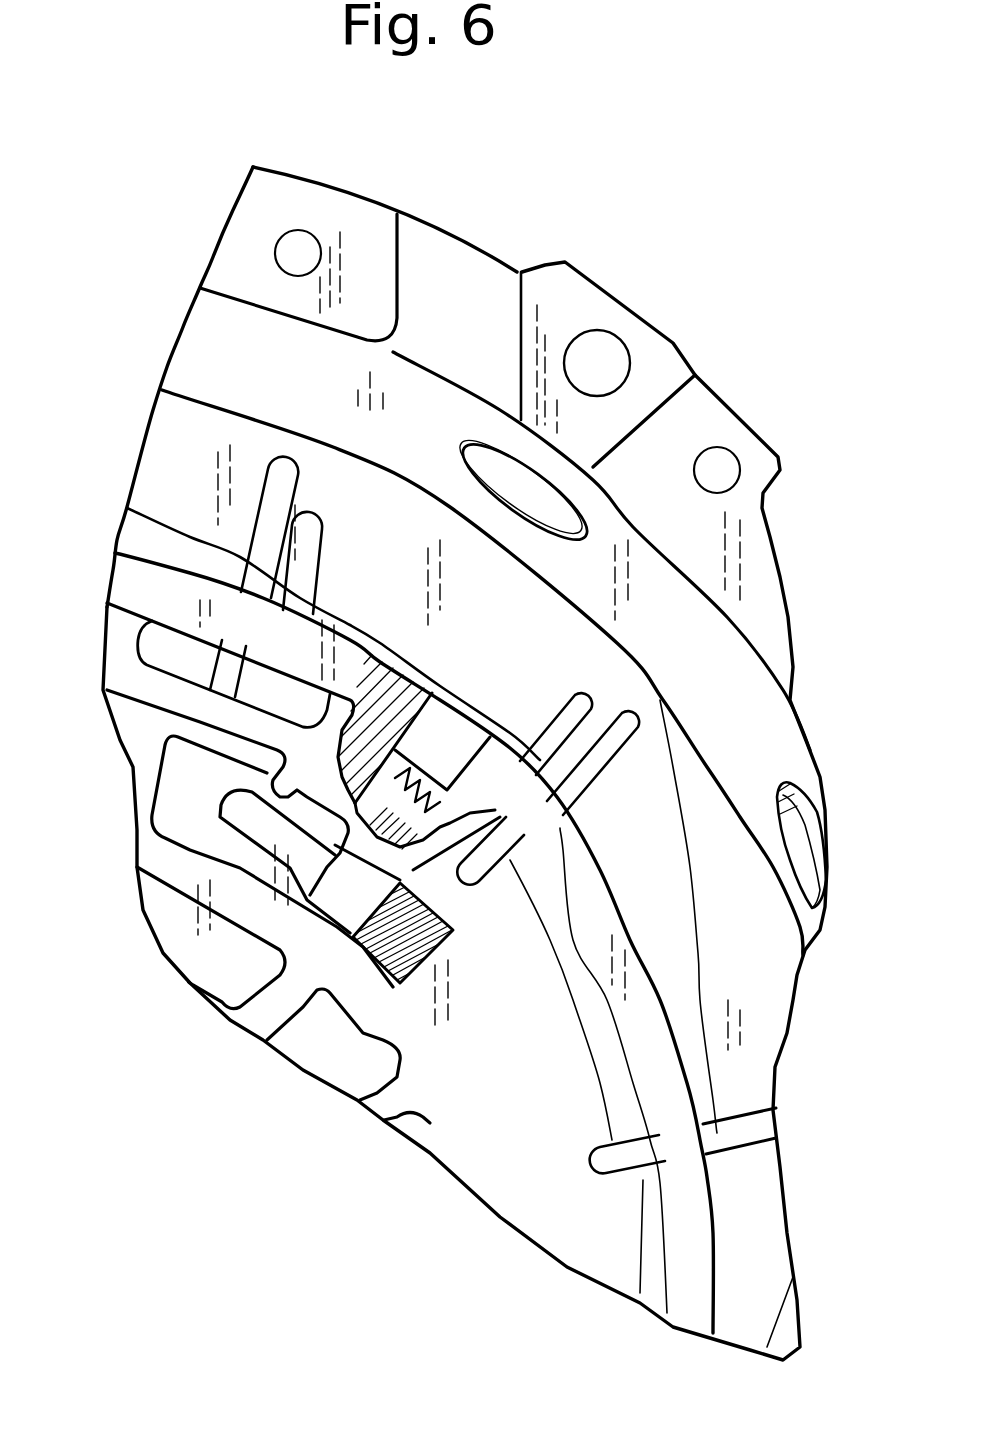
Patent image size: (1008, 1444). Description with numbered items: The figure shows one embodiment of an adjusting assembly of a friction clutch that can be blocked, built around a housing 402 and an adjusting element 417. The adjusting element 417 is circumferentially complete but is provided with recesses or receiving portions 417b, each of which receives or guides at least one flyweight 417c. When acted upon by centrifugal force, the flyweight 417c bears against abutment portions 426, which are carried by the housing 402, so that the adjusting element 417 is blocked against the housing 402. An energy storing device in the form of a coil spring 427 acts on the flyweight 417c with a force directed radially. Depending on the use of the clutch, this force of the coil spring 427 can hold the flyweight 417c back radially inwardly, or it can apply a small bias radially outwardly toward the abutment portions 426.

The housing 402 is at (683, 428).
The adjusting element 417 is at (692, 1242).
The receiving portion 417b is at (420, 818).
The flyweight 417c is at (437, 745).
The abutment portion 426 is at (441, 674).
The coil spring 427 is at (403, 793).